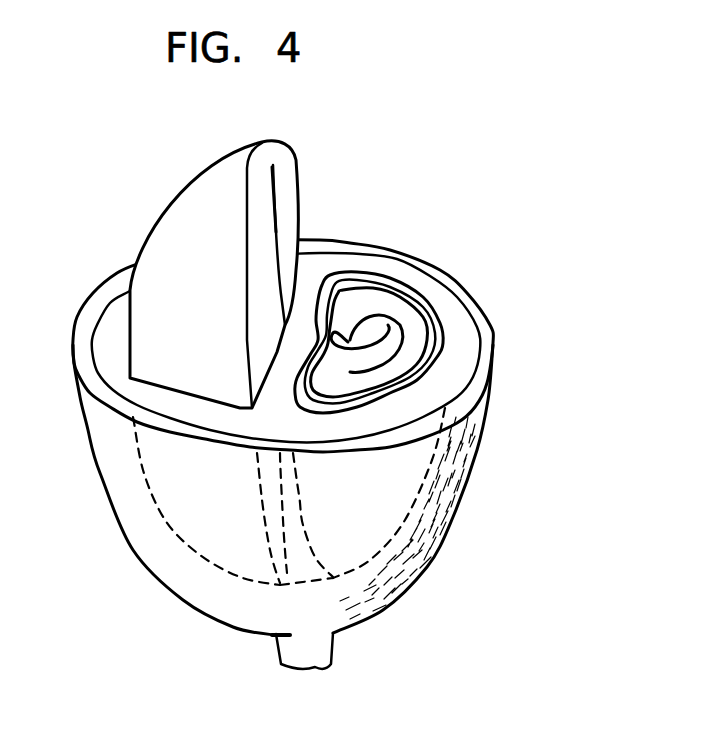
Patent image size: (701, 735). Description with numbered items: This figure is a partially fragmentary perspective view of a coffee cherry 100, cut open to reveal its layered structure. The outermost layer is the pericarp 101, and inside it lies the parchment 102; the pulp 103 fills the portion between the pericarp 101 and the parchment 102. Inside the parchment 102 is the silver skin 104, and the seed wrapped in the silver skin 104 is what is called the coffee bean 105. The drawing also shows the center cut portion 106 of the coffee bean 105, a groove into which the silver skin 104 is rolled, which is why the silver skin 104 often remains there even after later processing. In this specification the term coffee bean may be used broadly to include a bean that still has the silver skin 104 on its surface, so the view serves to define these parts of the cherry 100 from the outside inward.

The coffee cherry 100 is at (101, 529).
The pericarp 101 is at (390, 252).
The parchment 102 is at (443, 330).
The pulp 103 is at (437, 296).
The silver skin 104 is at (397, 382).
The coffee bean 105 is at (195, 195).
The center cut portion 106 is at (277, 232).